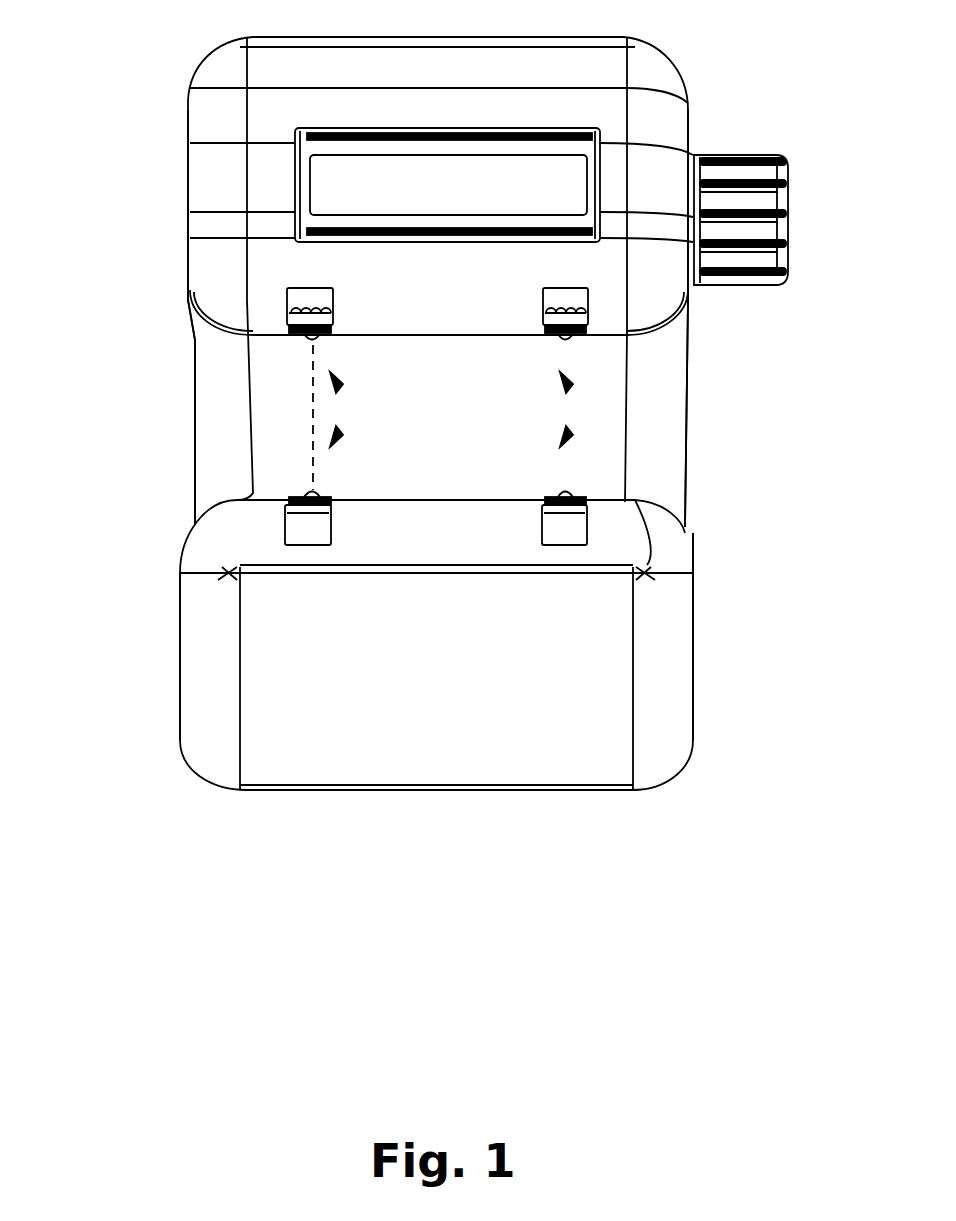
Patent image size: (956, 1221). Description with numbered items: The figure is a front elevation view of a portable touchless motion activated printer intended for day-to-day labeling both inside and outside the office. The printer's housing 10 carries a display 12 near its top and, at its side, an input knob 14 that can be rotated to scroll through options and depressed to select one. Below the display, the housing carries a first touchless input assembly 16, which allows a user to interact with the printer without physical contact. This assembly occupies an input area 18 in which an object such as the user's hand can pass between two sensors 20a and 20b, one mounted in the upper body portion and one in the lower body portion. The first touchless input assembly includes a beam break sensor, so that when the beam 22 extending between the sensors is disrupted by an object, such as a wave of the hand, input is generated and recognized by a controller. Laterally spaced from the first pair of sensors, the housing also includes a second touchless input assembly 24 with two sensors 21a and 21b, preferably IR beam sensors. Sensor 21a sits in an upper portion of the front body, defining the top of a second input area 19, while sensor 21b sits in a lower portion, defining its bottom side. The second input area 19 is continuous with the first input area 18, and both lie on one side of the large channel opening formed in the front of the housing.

The housing 10 is at (434, 413).
The display 12 is at (320, 176).
The input knob 14 is at (785, 198).
The first touchless input assembly 16 is at (338, 432).
The input area 18 is at (178, 418).
The second input area 19 is at (666, 425).
The sensor 20a is at (333, 322).
The sensor 20b is at (331, 510).
The sensor 21a is at (543, 323).
The sensor 21b is at (545, 507).
The beam 22 is at (313, 418).
The second touchless input assembly 24 is at (568, 432).